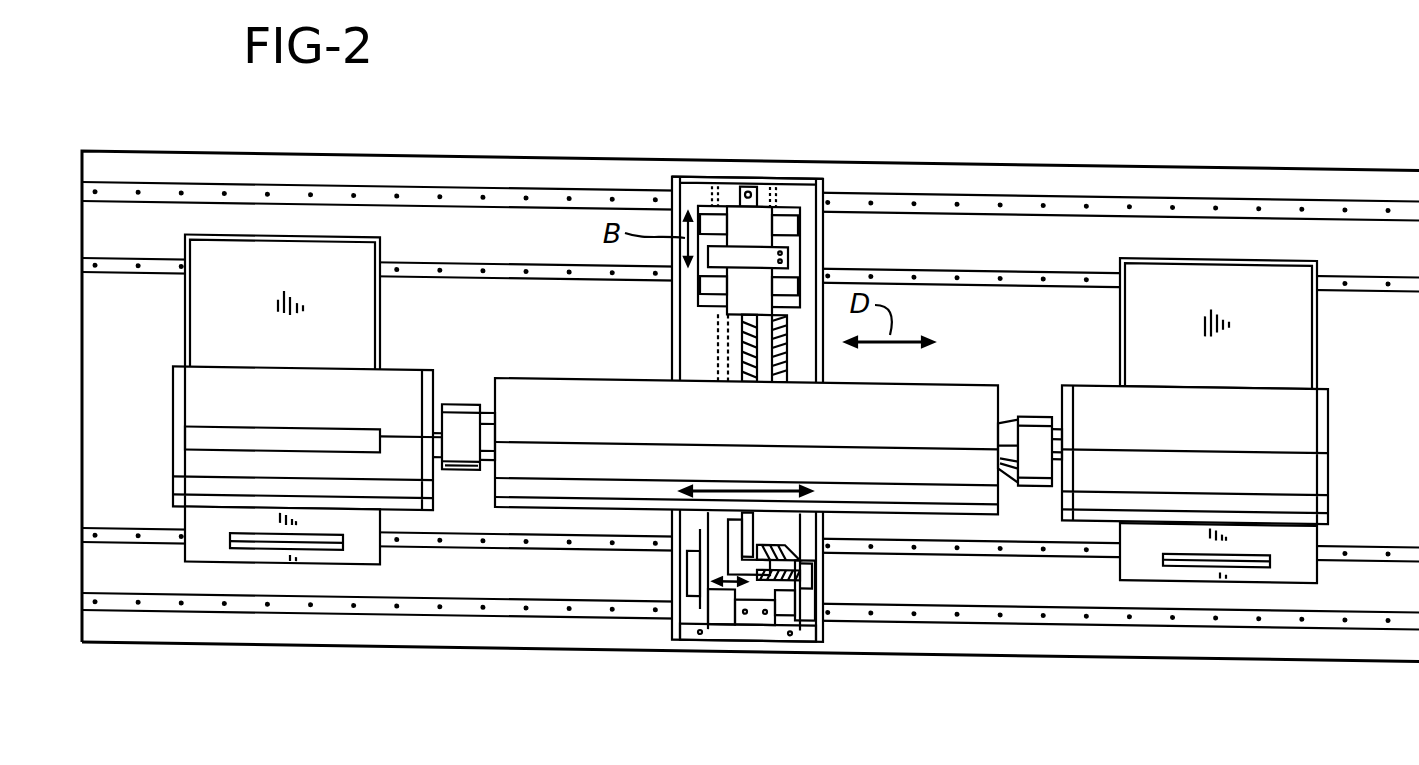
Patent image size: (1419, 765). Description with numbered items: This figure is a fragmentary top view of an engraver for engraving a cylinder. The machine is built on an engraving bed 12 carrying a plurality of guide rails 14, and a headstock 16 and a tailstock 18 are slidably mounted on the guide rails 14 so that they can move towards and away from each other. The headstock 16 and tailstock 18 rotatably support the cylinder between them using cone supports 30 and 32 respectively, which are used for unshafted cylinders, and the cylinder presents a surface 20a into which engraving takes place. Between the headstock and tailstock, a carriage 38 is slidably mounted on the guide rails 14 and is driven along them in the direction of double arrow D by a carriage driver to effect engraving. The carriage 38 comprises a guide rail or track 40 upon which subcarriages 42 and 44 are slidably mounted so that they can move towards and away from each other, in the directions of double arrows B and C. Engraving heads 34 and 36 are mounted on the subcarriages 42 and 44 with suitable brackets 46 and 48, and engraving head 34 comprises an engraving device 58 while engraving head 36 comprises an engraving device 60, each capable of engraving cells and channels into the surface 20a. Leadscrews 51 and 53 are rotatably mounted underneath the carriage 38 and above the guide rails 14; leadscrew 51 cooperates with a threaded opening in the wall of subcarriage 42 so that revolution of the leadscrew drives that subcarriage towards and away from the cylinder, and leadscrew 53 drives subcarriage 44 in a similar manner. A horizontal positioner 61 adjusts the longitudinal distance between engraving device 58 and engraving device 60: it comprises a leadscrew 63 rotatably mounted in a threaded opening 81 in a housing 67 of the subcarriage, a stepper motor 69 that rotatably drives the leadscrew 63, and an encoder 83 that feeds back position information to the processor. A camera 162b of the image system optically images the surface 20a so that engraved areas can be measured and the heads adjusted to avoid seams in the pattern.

The engraving bed 12 is at (291, 643).
The guide rails 14 is at (1085, 208).
The headstock 16 is at (278, 245).
The tailstock 18 is at (1203, 268).
The surface of cylinder 20a is at (975, 381).
The cone support 30 is at (458, 403).
The cone support 32 is at (1048, 418).
The engraving head 34 is at (755, 612).
The engraving head 36 is at (735, 215).
The carriage 38 is at (828, 225).
The guide rail or track 40 is at (748, 190).
The subcarriage 42 is at (797, 207).
The subcarriage 44 is at (797, 617).
The bracket 46 is at (718, 258).
The bracket 48 is at (738, 630).
The leadscrew 51 is at (672, 170).
The leadscrew 53 is at (800, 175).
The engraving device 58 is at (747, 535).
The engraving device 60 is at (745, 325).
The horizontal positioner 61 is at (690, 623).
The leadscrew 63 is at (803, 578).
The housing 67 is at (792, 590).
The stepper motor 69 is at (683, 560).
The threaded opening 81 is at (787, 560).
The encoder 83 is at (805, 560).
The camera 162b is at (727, 527).